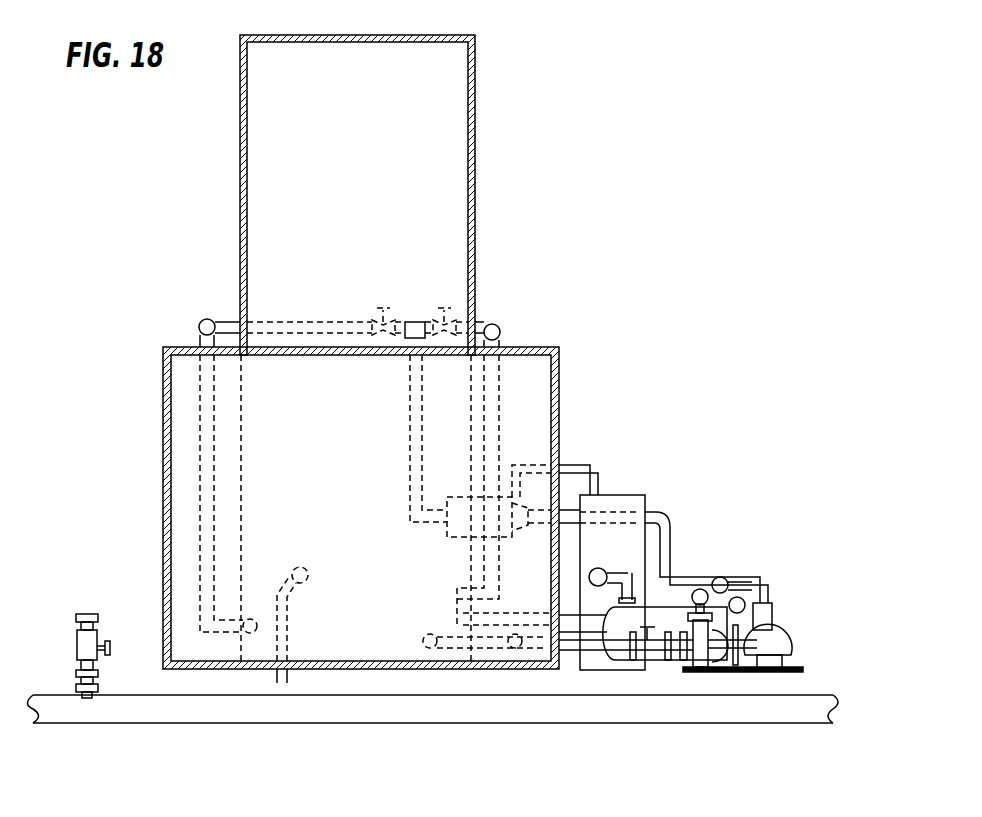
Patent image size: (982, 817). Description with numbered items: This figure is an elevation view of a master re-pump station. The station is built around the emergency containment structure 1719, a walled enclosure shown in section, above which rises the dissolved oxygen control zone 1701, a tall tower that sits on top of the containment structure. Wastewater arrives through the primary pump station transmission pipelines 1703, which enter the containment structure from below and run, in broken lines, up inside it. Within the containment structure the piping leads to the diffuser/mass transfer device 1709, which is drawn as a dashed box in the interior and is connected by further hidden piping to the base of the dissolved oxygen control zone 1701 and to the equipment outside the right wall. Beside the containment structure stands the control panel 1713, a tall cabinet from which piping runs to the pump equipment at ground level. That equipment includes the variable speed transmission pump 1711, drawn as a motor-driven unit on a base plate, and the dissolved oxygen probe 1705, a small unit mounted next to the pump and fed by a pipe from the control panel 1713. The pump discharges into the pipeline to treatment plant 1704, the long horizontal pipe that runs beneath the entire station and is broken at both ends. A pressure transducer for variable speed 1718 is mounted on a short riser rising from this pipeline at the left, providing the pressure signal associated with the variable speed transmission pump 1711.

The dissolved oxygen control zone 1701 is at (440, 181).
The emergency containment structure 1719 is at (160, 493).
The primary pump station transmission pipelines 1703 is at (292, 625).
The pipeline to treatment plant 1704 is at (263, 716).
The dissolved oxygen probe 1705 is at (768, 610).
The diffuser/mass transfer device 1709 is at (445, 539).
The variable speed transmission pump 1711 is at (773, 645).
The control panel 1713 is at (623, 547).
The pressure transducer for variable speed 1718 is at (60, 637).